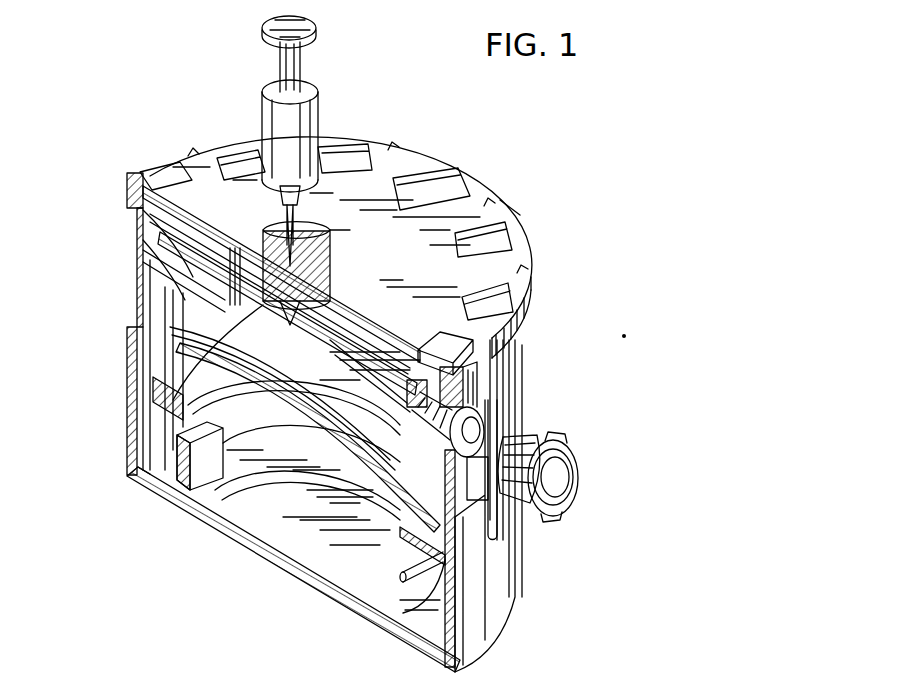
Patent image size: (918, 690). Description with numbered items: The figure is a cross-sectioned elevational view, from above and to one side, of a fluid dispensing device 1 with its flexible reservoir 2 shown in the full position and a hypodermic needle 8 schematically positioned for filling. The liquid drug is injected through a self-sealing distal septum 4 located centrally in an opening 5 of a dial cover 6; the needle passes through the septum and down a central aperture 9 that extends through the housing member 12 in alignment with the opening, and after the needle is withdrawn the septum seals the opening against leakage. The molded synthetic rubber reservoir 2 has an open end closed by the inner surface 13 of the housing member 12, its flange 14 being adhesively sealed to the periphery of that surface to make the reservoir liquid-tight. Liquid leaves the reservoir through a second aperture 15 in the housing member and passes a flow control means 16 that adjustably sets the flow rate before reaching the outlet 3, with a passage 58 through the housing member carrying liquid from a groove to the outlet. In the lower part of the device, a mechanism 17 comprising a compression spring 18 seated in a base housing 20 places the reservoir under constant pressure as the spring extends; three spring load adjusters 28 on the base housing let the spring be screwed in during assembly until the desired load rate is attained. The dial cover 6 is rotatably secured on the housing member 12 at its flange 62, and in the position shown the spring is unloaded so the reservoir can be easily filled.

The fluid dispensing device 1 is at (527, 193).
The reservoir 2 is at (138, 305).
The outlet 3 is at (578, 462).
The distal septum 4 is at (331, 250).
The opening 5 is at (332, 229).
The dial cover 6 is at (495, 268).
The hypodermic needle 8 is at (318, 100).
The central aperture 9 is at (287, 312).
The housing member 12 is at (140, 240).
The inner surface 13 is at (150, 327).
The flange 14 is at (138, 290).
The second aperture 15 is at (150, 357).
The flow control means 16 is at (152, 186).
The mechanism 17 is at (158, 535).
The compression spring 18 is at (210, 492).
The base housing 20 is at (475, 630).
The spring load adjusters 28 is at (205, 468).
The passage 58 is at (410, 411).
The flange 62 is at (127, 200).